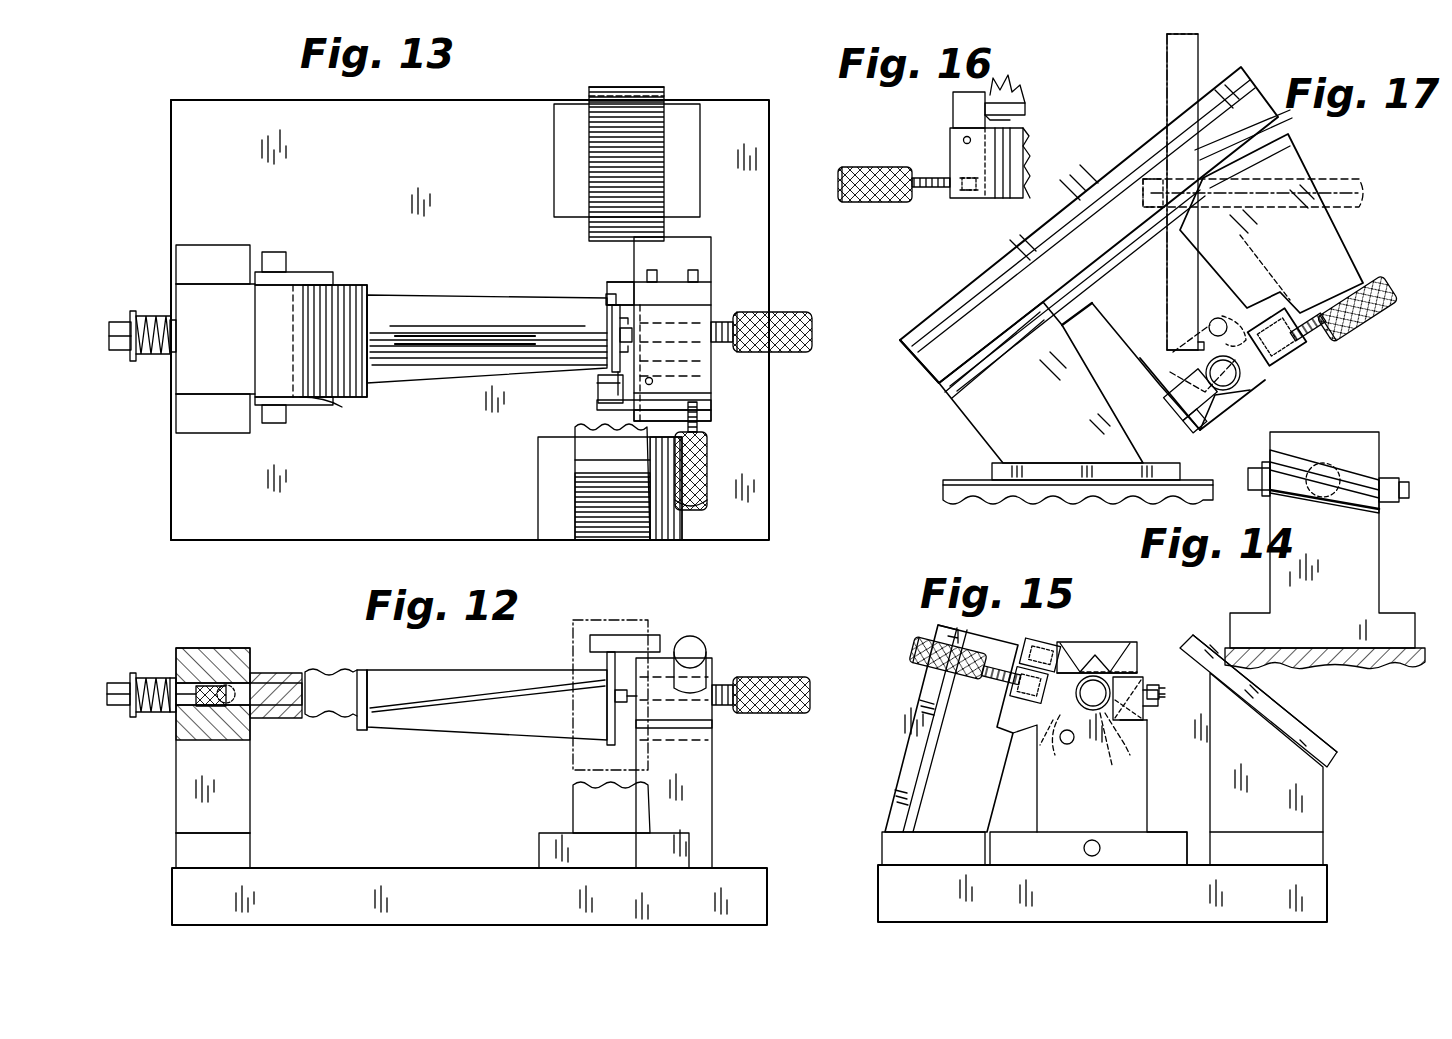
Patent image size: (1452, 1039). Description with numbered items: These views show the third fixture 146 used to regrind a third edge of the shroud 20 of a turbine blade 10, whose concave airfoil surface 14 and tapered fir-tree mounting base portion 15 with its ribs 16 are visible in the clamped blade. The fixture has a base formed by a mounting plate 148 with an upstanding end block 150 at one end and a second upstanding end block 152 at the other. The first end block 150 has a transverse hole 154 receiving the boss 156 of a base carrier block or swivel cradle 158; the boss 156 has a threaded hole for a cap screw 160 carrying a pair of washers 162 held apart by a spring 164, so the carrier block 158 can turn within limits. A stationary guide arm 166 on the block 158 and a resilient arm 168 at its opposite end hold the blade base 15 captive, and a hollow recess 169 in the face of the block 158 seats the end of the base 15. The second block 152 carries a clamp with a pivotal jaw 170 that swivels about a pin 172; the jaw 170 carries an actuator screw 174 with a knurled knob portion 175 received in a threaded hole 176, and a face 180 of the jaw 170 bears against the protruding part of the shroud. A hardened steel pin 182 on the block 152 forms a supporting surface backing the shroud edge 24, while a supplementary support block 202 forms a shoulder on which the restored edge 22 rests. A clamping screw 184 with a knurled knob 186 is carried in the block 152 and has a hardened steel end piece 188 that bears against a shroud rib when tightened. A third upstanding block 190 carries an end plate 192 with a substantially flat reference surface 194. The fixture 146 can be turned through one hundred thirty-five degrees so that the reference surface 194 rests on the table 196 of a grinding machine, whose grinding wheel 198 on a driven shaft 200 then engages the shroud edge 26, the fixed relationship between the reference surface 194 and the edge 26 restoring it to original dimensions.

In FIG. 13, the turbine blade 10 is at (462, 290).
In FIG. 12, the turbine blade 10 is at (463, 743).
In FIG. 16, the turbine blade 10 is at (1008, 94).
In FIG. 12, the concave airfoil surface 14 is at (303, 620).
In FIG. 13, the mounting base portion 15 is at (343, 288).
In FIG. 12, the mounting base portion 15 is at (361, 682).
In FIG. 15, the ribs 16 is at (1074, 652).
In FIG. 13, the shroud 20 is at (596, 376).
In FIG. 17, the edge portion 22 is at (1226, 425).
In FIG. 15, the edge portion 22 is at (1135, 678).
In FIG. 17, the edge portion 24 is at (1221, 317).
In FIG. 15, the edge portion 24 is at (1062, 758).
In FIG. 17, the edge portion 26 is at (1168, 372).
In FIG. 15, the edge portion 26 is at (1122, 750).
In FIG. 13, the third fixture 146 is at (160, 516).
In FIG. 12, the third fixture 146 is at (152, 825).
In FIG. 17, the third fixture 146 is at (907, 371).
In FIG. 15, the third fixture 146 is at (865, 851).
In FIG. 13, the mounting plate 148 is at (205, 128).
In FIG. 12, the mounting plate 148 is at (180, 905).
In FIG. 17, the mounting plate 148 is at (978, 296).
In FIG. 14, the mounting plate 148 is at (1366, 662).
In FIG. 15, the mounting plate 148 is at (895, 900).
In FIG. 13, the upstanding end block 150 is at (200, 388).
In FIG. 12, the upstanding end block 150 is at (233, 813).
In FIG. 14, the upstanding end block 150 is at (1288, 584).
In FIG. 13, the second upstanding end block 152 is at (711, 383).
In FIG. 12, the second upstanding end block 152 is at (692, 806).
In FIG. 16, the second upstanding end block 152 is at (966, 200).
In FIG. 17, the second upstanding end block 152 is at (1271, 211).
In FIG. 15, the second upstanding end block 152 is at (1138, 802).
In FIG. 12, the transverse hole 154 is at (245, 670).
In FIG. 12, the boss 156 is at (206, 684).
In FIG. 13, the base carrier block 158 is at (270, 306).
In FIG. 12, the base carrier block 158 is at (278, 718).
In FIG. 14, the base carrier block 158 is at (1331, 512).
In FIG. 13, the cap screw 160 is at (118, 322).
In FIG. 12, the cap screw 160 is at (120, 683).
In FIG. 13, the washers 162 is at (130, 358).
In FIG. 12, the washers 162 is at (132, 718).
In FIG. 13, the spring 164 is at (155, 316).
In FIG. 12, the spring 164 is at (150, 678).
In FIG. 13, the stationary guide arm 166 is at (325, 285).
In FIG. 14, the stationary guide arm 166 is at (1386, 502).
In FIG. 13, the resilient arm 168 is at (318, 408).
In FIG. 14, the resilient arm 168 is at (1258, 466).
In FIG. 12, the hollow recess 169 is at (270, 680).
In FIG. 14, the hollow recess 169 is at (1350, 470).
In FIG. 13, the pivotal jaw 170 is at (605, 395).
In FIG. 16, the pivotal jaw 170 is at (968, 106).
In FIG. 17, the pivotal jaw 170 is at (1296, 360).
In FIG. 15, the pivotal jaw 170 is at (1032, 662).
In FIG. 13, the pin 172 is at (653, 381).
In FIG. 16, the pin 172 is at (963, 140).
In FIG. 15, the pin 172 is at (1000, 720).
In FIG. 13, the actuator screw 174 is at (700, 428).
In FIG. 16, the actuator screw 174 is at (940, 188).
In FIG. 17, the actuator screw 174 is at (1314, 336).
In FIG. 15, the actuator screw 174 is at (990, 685).
In FIG. 13, the knurled knob portion 175 is at (707, 468).
In FIG. 12, the knurled knob portion 175 is at (695, 640).
In FIG. 16, the knurled knob portion 175 is at (872, 204).
In FIG. 17, the knurled knob portion 175 is at (1375, 298).
In FIG. 15, the knurled knob portion 175 is at (912, 660).
In FIG. 16, the threaded hole 176 is at (972, 198).
In FIG. 16, the face 180 is at (1010, 116).
In FIG. 13, the hardened steel pin 182 is at (620, 385).
In FIG. 12, the hardened steel pin 182 is at (623, 745).
In FIG. 17, the hardened steel pin 182 is at (1214, 326).
In FIG. 15, the hardened steel pin 182 is at (1069, 744).
In FIG. 13, the clamping screw 184 is at (718, 322).
In FIG. 12, the clamping screw 184 is at (718, 707).
In FIG. 13, the knurled knob 186 is at (790, 330).
In FIG. 12, the knurled knob 186 is at (782, 680).
In FIG. 17, the knurled knob 186 is at (1210, 415).
In FIG. 15, the knurled knob 186 is at (1106, 660).
In FIG. 13, the hardened steel end piece 188 is at (613, 317).
In FIG. 12, the hardened steel end piece 188 is at (618, 690).
In FIG. 13, the third upstanding block 190 is at (582, 148).
In FIG. 17, the third upstanding block 190 is at (995, 428).
In FIG. 15, the third upstanding block 190 is at (1305, 796).
In FIG. 17, the end plate 192 is at (1158, 470).
In FIG. 15, the end plate 192 is at (1300, 715).
In FIG. 13, the reference surface 194 is at (620, 142).
In FIG. 17, the reference surface 194 is at (1048, 485).
In FIG. 15, the reference surface 194 is at (1309, 732).
In FIG. 17, the table 196 is at (956, 489).
In FIG. 17, the grinding wheel 198 is at (1167, 70).
In FIG. 17, the shaft 200 is at (1338, 179).
In FIG. 13, the block 202 is at (625, 284).
In FIG. 12, the block 202 is at (616, 695).
In FIG. 15, the block 202 is at (1150, 670).